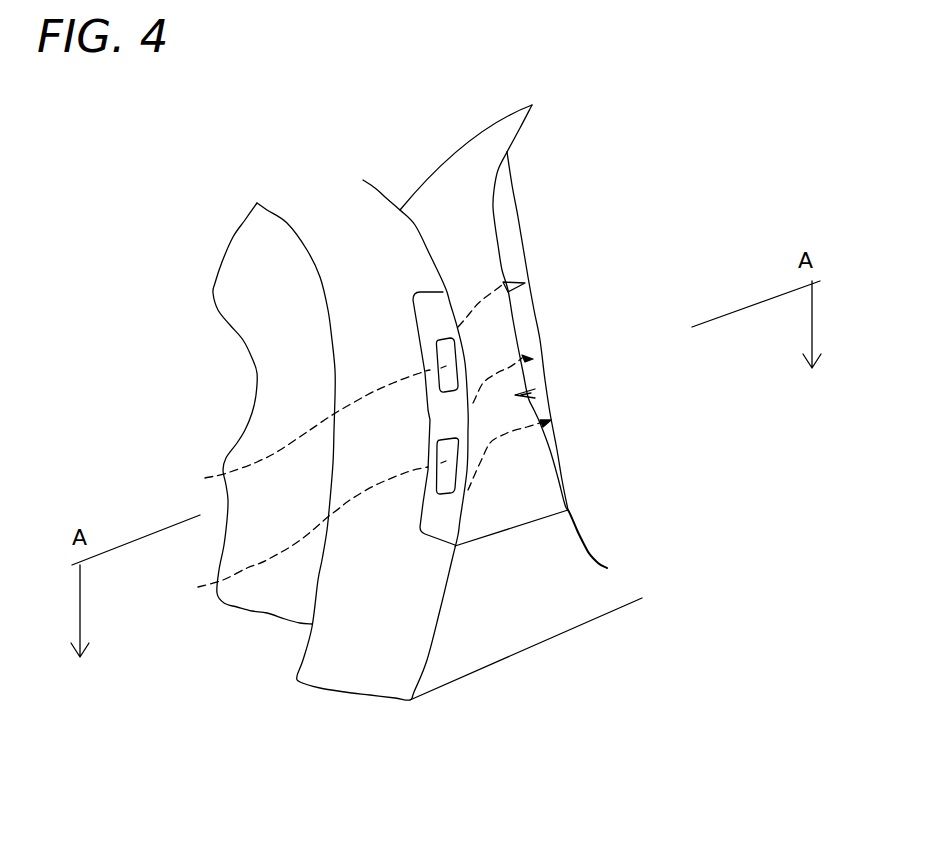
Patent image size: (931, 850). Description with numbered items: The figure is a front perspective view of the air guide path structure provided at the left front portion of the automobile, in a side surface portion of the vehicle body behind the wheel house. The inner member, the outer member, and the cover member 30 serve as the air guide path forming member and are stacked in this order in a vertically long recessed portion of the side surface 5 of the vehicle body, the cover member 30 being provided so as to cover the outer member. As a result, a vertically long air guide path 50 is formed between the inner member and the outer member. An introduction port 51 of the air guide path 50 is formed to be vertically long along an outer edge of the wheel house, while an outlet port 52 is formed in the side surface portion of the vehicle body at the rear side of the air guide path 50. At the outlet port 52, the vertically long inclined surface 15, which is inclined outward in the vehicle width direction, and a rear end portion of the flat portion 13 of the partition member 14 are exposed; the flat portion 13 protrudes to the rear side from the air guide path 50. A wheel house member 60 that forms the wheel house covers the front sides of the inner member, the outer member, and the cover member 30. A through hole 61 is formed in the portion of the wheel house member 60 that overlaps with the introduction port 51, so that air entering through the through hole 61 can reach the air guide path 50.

The side surface 5 is at (508, 627).
The flat portion 13 is at (596, 360).
The partition member 14 is at (523, 357).
The vertically long inclined surface 15 is at (505, 208).
The cover member 30 is at (518, 478).
The air guide path 50 is at (543, 392).
The introduction port 51 is at (332, 443).
The outlet port 52 is at (550, 418).
The wheel house member 60 is at (340, 657).
The through hole 61 is at (332, 443).